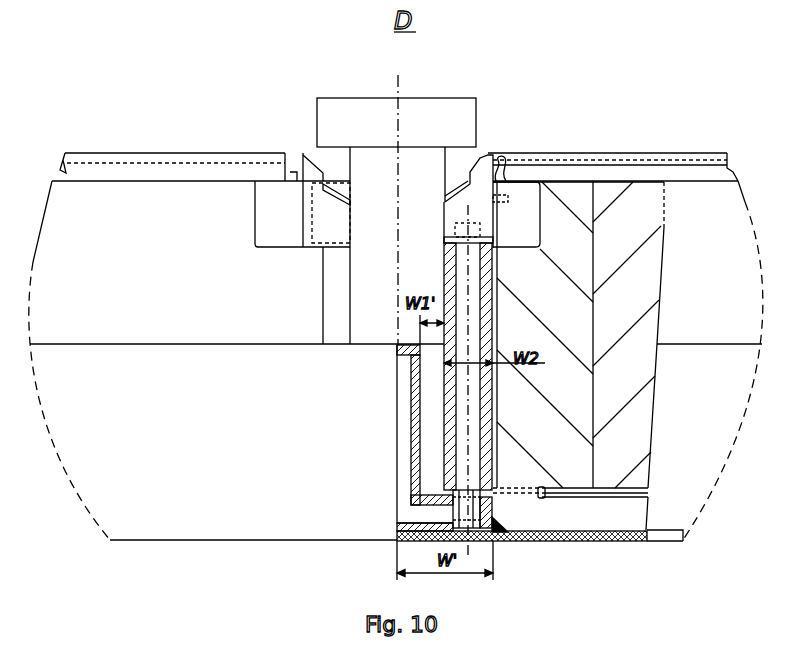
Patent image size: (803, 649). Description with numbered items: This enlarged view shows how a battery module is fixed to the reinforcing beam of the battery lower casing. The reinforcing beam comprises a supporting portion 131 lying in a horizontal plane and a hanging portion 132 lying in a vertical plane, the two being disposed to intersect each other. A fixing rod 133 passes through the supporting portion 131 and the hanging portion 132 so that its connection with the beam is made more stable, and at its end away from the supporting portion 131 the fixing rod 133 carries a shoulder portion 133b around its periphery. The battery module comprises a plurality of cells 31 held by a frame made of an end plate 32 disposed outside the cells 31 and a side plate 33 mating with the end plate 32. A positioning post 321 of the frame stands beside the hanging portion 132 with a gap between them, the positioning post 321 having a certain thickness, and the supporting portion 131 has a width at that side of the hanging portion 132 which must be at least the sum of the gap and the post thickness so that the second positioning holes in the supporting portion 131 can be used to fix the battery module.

The cell 31 is at (640, 287).
The end plate 32 is at (455, 213).
The positioning post 321 is at (443, 462).
The side plate 33 is at (170, 195).
The supporting portion 131 is at (410, 522).
The hanging portion 132 is at (411, 430).
The fixing rod 133 is at (358, 268).
The shoulder portion 133b is at (333, 125).